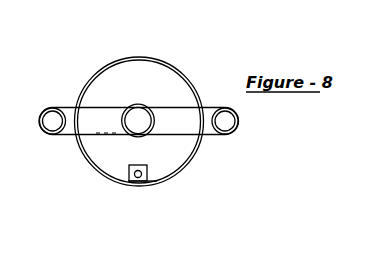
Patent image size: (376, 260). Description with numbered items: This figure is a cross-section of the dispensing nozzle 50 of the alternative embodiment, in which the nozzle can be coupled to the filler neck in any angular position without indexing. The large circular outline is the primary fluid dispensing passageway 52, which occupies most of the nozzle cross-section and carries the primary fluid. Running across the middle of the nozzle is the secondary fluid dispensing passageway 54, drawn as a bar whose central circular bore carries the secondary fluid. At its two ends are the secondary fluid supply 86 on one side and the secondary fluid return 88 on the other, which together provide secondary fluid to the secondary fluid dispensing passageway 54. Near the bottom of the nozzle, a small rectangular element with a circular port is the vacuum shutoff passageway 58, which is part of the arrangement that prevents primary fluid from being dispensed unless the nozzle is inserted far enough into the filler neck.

The dispensing nozzle 50 is at (172, 66).
The primary fluid dispensing passageway 52 is at (125, 80).
The secondary fluid dispensing passageway 54 is at (138, 115).
The vacuum shutoff passageway 58 is at (142, 175).
The secondary fluid supply 86 is at (230, 120).
The secondary fluid return 88 is at (47, 130).